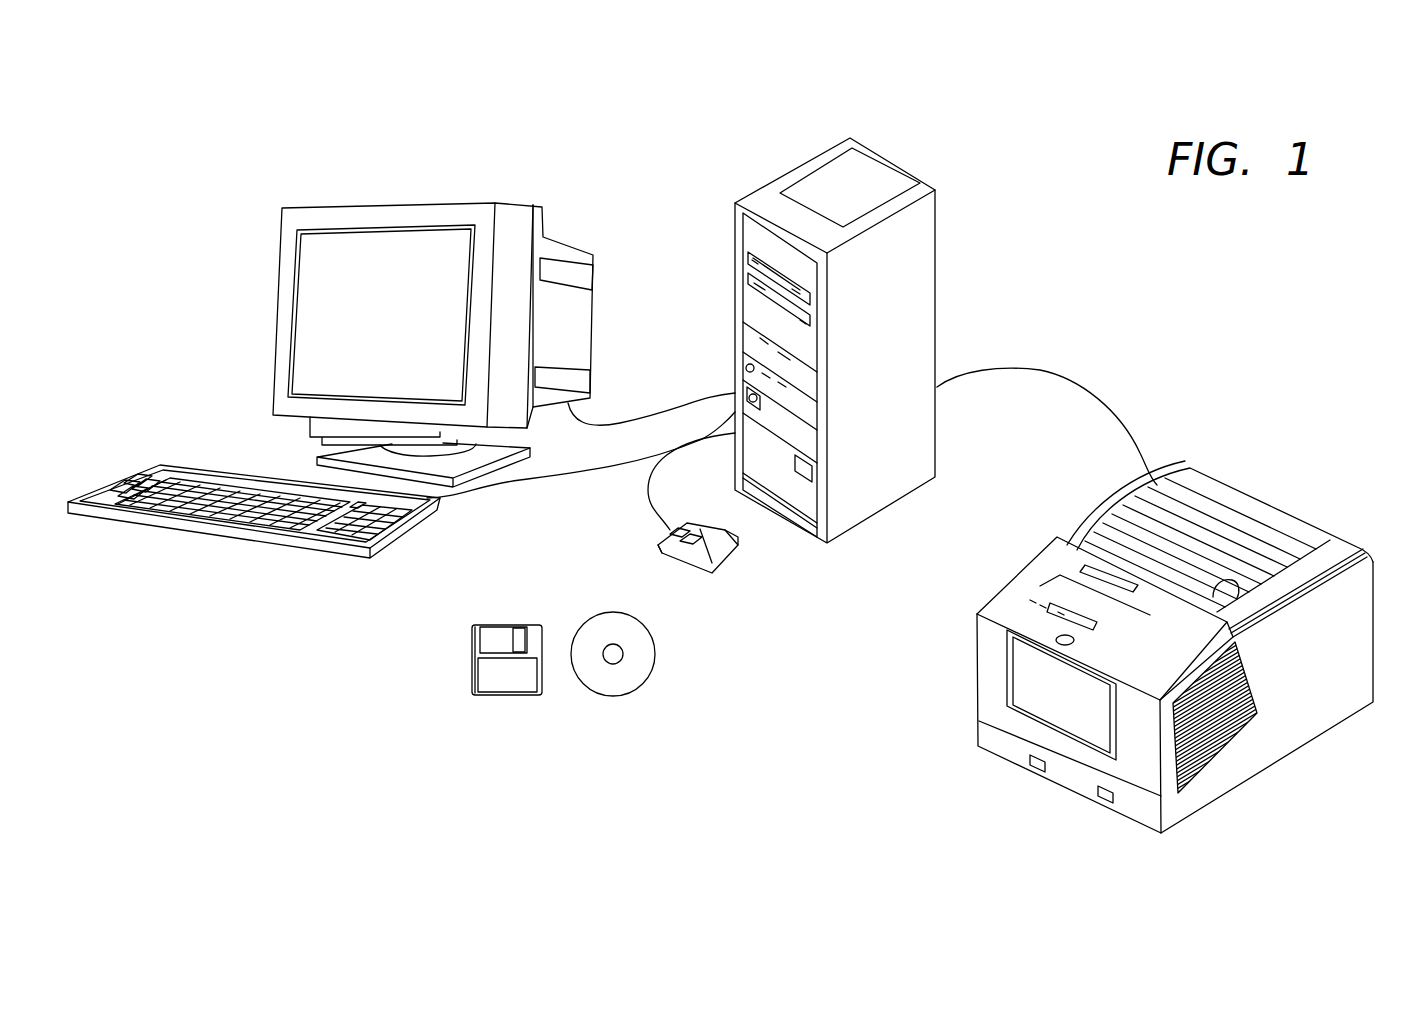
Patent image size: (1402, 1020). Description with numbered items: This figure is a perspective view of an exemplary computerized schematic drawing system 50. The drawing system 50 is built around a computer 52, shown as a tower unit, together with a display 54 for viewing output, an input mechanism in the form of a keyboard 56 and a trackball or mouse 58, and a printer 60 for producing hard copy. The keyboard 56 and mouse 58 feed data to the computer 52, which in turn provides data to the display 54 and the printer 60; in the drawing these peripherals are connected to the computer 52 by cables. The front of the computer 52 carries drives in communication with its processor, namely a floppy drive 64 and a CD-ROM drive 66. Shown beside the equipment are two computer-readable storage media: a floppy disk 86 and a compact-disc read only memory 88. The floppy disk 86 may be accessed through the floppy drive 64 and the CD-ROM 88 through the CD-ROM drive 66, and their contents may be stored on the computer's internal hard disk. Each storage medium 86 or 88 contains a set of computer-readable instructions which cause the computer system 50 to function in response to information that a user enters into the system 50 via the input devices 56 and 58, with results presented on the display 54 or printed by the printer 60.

The computerized schematic drawing system 50 is at (335, 648).
The computer 52 is at (822, 152).
The display 54 is at (443, 206).
The keyboard 56 is at (181, 466).
The mouse 58 is at (715, 567).
The printer 60 is at (1213, 482).
The floppy drive 64 is at (745, 257).
The CD-ROM drive 66 is at (745, 282).
The floppy disk 86 is at (487, 668).
The compact-disc read only memory (CD-ROM) 88 is at (642, 660).